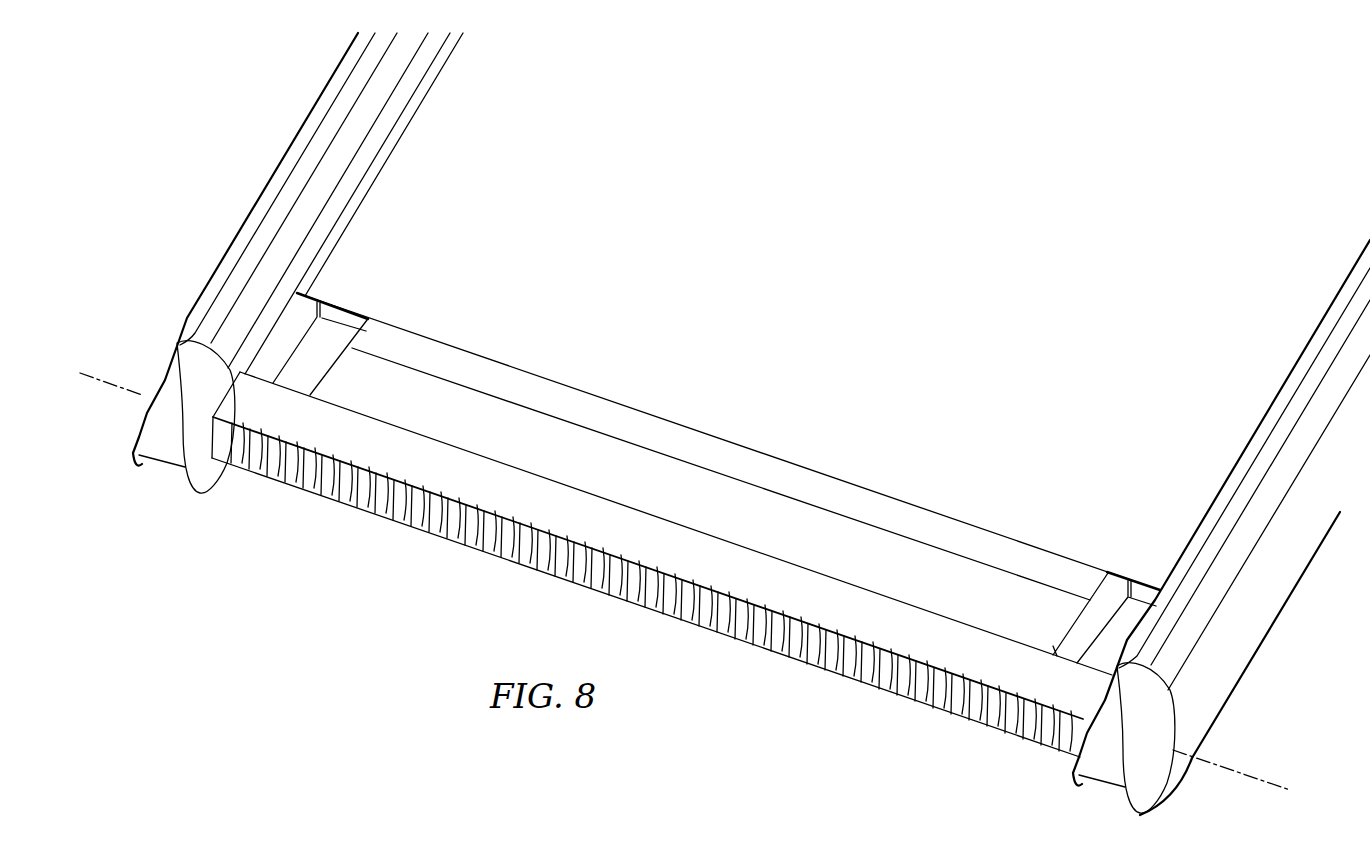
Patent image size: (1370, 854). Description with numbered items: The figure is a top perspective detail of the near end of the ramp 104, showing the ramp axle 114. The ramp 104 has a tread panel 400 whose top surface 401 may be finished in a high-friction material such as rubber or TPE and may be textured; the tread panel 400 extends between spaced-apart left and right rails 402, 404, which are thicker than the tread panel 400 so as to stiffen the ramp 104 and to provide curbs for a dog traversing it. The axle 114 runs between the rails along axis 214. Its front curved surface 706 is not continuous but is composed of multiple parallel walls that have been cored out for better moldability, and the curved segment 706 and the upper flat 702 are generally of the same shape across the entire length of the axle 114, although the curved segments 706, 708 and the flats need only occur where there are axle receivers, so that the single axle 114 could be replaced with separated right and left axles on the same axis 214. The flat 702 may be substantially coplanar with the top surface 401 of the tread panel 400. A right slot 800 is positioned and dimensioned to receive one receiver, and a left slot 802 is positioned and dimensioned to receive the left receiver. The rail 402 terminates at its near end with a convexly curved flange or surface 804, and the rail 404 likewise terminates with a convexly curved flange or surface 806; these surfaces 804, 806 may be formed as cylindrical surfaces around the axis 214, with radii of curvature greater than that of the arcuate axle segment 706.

The ramp 104 is at (226, 195).
The axle 114 is at (663, 547).
The axis 214 is at (85, 373).
The tread panel 400 is at (931, 217).
The top surface 401 is at (728, 396).
The left rail 402 is at (1201, 540).
The right rail 404 is at (282, 278).
The upper flat 702 is at (662, 564).
The front curved surface 706 is at (641, 592).
The curved segment 708 is at (383, 127).
The right slot 800 is at (328, 343).
The left slot 802 is at (1118, 632).
The convexly curved flange 804 is at (1103, 762).
The convexly curved flange 806 is at (170, 437).